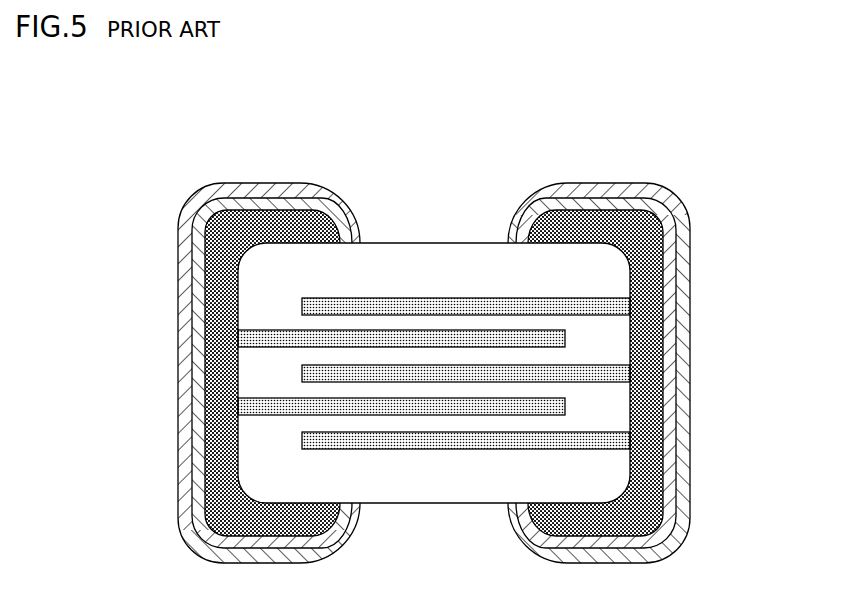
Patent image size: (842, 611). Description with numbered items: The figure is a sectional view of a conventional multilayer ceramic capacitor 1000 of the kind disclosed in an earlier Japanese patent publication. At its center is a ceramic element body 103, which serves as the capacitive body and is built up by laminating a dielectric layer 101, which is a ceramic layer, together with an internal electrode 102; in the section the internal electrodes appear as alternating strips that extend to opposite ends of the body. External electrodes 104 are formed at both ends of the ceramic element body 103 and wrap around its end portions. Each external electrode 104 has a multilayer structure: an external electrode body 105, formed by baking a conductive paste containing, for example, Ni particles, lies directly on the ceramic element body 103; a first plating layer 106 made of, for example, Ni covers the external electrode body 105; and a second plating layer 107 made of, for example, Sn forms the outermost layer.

The multilayer ceramic capacitor 1000 is at (133, 85).
The dielectric layer 101 is at (404, 323).
The internal electrode 102 is at (443, 306).
The ceramic element body 103 is at (482, 268).
The external electrode 104 is at (434, 360).
The external electrode body 105 is at (220, 337).
The first plating layer 106 is at (198, 363).
The second plating layer 107 is at (185, 393).